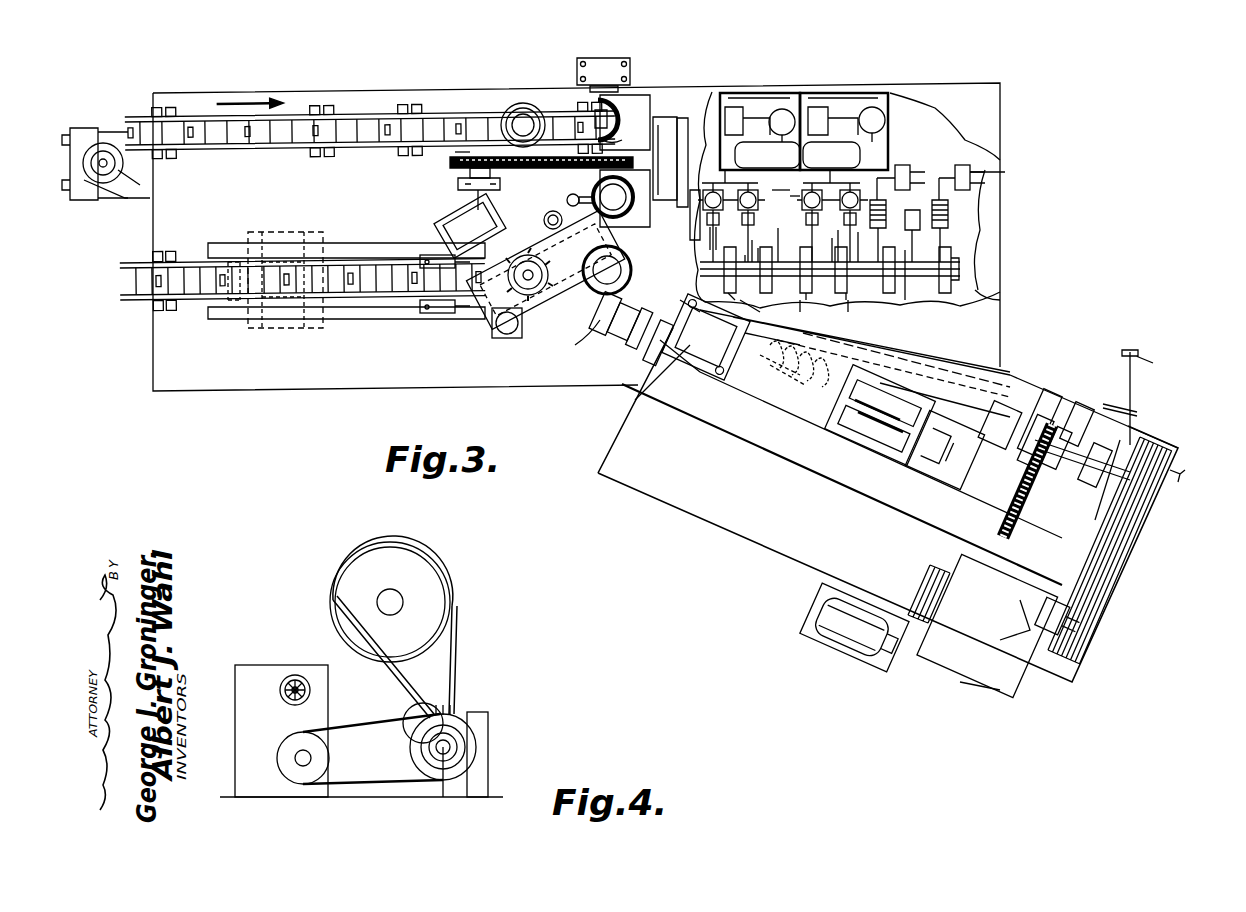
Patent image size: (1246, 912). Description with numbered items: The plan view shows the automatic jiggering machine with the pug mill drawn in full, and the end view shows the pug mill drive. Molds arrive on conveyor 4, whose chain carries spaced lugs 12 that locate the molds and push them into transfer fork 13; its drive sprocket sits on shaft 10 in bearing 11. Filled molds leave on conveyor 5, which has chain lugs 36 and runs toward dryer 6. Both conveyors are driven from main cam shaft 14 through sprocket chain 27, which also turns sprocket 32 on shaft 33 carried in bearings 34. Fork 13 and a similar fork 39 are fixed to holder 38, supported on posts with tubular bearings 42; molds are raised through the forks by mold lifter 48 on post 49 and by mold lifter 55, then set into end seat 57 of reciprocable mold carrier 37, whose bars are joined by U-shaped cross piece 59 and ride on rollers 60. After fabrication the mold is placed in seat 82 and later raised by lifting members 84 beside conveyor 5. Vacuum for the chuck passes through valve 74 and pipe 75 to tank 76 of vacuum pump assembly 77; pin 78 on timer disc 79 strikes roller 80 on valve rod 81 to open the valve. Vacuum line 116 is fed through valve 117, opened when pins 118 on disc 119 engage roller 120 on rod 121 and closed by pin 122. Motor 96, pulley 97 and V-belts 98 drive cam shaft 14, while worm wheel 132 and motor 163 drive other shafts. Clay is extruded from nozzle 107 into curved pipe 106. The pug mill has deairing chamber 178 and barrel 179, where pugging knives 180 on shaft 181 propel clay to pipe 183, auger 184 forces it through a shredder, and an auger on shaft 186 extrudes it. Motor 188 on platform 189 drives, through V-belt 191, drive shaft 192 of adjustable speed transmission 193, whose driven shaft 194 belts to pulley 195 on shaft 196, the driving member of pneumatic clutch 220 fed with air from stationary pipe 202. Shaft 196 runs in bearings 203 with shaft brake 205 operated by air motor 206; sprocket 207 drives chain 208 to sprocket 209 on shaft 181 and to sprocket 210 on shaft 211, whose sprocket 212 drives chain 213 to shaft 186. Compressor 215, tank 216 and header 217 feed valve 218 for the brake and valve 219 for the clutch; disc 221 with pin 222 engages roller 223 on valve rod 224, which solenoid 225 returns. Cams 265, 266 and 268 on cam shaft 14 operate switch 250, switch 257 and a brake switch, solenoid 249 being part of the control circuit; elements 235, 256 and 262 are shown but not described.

In FIG. 3, the conveyor 4 is at (432, 122).
In FIG. 3, the conveyor 5 is at (200, 300).
In FIG. 3, the dryer 6 is at (348, 319).
In FIG. 3, the shaft 10 is at (618, 135).
In FIG. 3, the bearing 11 is at (600, 93).
In FIG. 3, the spaced lugs 12 is at (388, 127).
In FIG. 3, the transfer fork 13 is at (628, 100).
In FIG. 3, the main cam shaft 14 is at (785, 276).
In FIG. 3, the sprocket chain 27 is at (462, 163).
In FIG. 3, the sprocket 32 is at (460, 157).
In FIG. 3, the shaft 33 is at (490, 176).
In FIG. 3, the bearings 34 is at (458, 186).
In FIG. 3, the spaced chain lugs 36 is at (232, 262).
In FIG. 3, the reciprocable mold carrier 37 is at (365, 243).
In FIG. 3, the holder 38 is at (664, 118).
In FIG. 3, the fork 39 is at (635, 228).
In FIG. 3, the tubular bearing 42 is at (683, 125).
In FIG. 3, the offset mold lifter 48 is at (598, 190).
In FIG. 3, the post 49 is at (567, 198).
In FIG. 3, the mold lifter 55 is at (630, 262).
In FIG. 3, the end seat 57 is at (532, 297).
In FIG. 3, the U-shaped cross piece 59 is at (248, 262).
In FIG. 3, the rollers 60 is at (562, 222).
In FIG. 3, the valve 74 is at (690, 212).
In FIG. 3, the pipe 75 is at (732, 152).
In FIG. 3, the tank 76 is at (785, 115).
In FIG. 3, the vacuum pump assembly 77 is at (755, 98).
In FIG. 3, the pin 78 is at (683, 300).
In FIG. 3, the timer disc 79 is at (739, 287).
In FIG. 3, the roller 80 is at (699, 243).
In FIG. 3, the valve rod 81 is at (703, 238).
In FIG. 3, the seat 82 is at (432, 256).
In FIG. 3, the lifting members 84 is at (450, 256).
In FIG. 3, the motor 96 is at (100, 196).
In FIG. 3, the pulley 97 is at (104, 152).
In FIG. 3, the V-belts 98 is at (135, 200).
In FIG. 3, the curved pipe 106 is at (620, 325).
In FIG. 3, the nozzle 107 is at (650, 350).
In FIG. 3, the vacuum line 116 is at (730, 175).
In FIG. 3, the valve 117 is at (758, 195).
In FIG. 3, the pins 118 is at (779, 242).
In FIG. 3, the disc 119 is at (786, 248).
In FIG. 3, the roller 120 is at (773, 254).
In FIG. 3, the valve operating rod 121 is at (781, 220).
In FIG. 3, the pin 122 is at (747, 300).
In FIG. 3, the worm wheel 132 is at (500, 330).
In FIG. 3, the motor 163 is at (475, 225).
In FIG. 3, the deairing chamber 178 is at (675, 385).
In FIG. 3, the barrel 179 is at (935, 392).
In FIG. 3, the pugging knives 180 is at (920, 480).
In FIG. 3, the shaft 181 is at (875, 470).
In FIG. 4, the shaft 181 is at (390, 590).
In FIG. 3, the pipe 183 is at (720, 385).
In FIG. 3, the auger 184 is at (790, 400).
In FIG. 3, the shaft 186 is at (852, 440).
In FIG. 3, the motor 188 is at (845, 650).
In FIG. 3, the platform 189 is at (755, 528).
In FIG. 3, the V-belt drive 191 is at (925, 580).
In FIG. 3, the drive shaft 192 is at (945, 580).
In FIG. 3, the adjustable speed transmission 193 is at (985, 640).
In FIG. 4, the adjustable speed transmission 193 is at (300, 665).
In FIG. 3, the driven shaft 194 is at (1050, 605).
In FIG. 4, the driven shaft 194 is at (312, 758).
In FIG. 3, the pulley 195 is at (1165, 448).
In FIG. 3, the shaft 196 is at (1093, 472).
In FIG. 3, the stationary pipe 202 is at (791, 178).
In FIG. 3, the bearings 203 is at (1078, 408).
In FIG. 3, the shaft brake 205 is at (1082, 462).
In FIG. 3, the air motor 206 is at (1140, 376).
In FIG. 3, the sprocket 207 is at (1045, 400).
In FIG. 3, the chain 208 is at (1020, 525).
In FIG. 4, the chain 208 is at (455, 640).
In FIG. 4, the drive sprocket 209 is at (440, 583).
In FIG. 4, the lower level sprocket 210 is at (405, 715).
In FIG. 3, the shaft 211 is at (890, 344).
In FIG. 3, the sprocket 212 is at (828, 322).
In FIG. 3, the chain 213 is at (850, 330).
In FIG. 3, the compressor 215 is at (845, 108).
In FIG. 3, the pressure equalizing tank 216 is at (885, 122).
In FIG. 3, the main header 217 is at (831, 155).
In FIG. 3, the valve 218 is at (785, 205).
In FIG. 3, the valve 219 is at (832, 188).
In FIG. 3, the pneumatically operated clutch 220 is at (1178, 470).
In FIG. 4, the pneumatically operated clutch 220 is at (460, 758).
In FIG. 3, the disc 221 is at (834, 304).
In FIG. 3, the pin 222 is at (796, 232).
In FIG. 3, the roller 223 is at (835, 291).
In FIG. 3, the valve rod 224 is at (853, 236).
In FIG. 3, the solenoid 225 is at (832, 242).
In FIG. 3, the arm 235 is at (575, 345).
In FIG. 3, the solenoid 249 is at (895, 227).
In FIG. 3, the switch 250 is at (901, 168).
In FIG. 3, the solenoid 256 is at (954, 229).
In FIG. 3, the switch 257 is at (1007, 163).
In FIG. 3, the switch 262 is at (962, 174).
In FIG. 3, the cam 265 is at (939, 379).
In FIG. 3, the cam 266 is at (990, 296).
In FIG. 3, the cam 268 is at (922, 278).